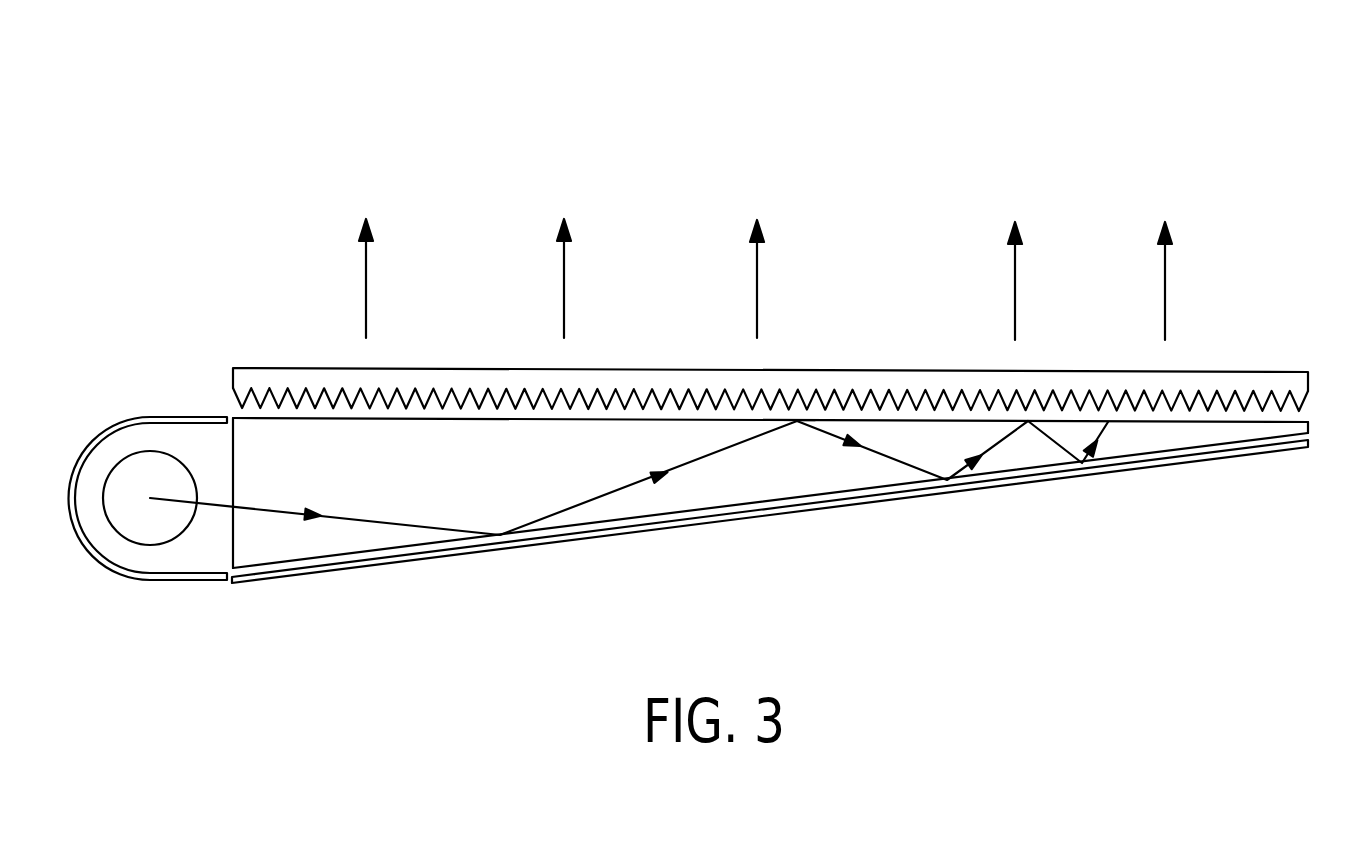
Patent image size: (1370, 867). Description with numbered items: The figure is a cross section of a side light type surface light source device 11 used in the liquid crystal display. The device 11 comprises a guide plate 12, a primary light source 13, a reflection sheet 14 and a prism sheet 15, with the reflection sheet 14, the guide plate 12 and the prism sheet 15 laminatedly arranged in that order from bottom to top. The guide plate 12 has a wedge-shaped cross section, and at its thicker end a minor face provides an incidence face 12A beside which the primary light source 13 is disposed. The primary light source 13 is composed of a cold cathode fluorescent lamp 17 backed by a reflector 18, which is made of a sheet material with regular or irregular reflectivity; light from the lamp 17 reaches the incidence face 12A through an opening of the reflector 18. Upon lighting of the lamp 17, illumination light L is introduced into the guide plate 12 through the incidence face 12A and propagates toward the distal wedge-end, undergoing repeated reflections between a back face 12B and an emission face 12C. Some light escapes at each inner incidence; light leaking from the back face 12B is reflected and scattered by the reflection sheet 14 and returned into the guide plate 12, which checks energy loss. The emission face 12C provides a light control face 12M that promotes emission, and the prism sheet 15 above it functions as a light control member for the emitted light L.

The surface light source device 11 is at (952, 120).
The guide plate 12 is at (720, 497).
The incidence face 12A is at (233, 487).
The back face 12B is at (563, 528).
The emission face 12C is at (797, 421).
The light control face 12M is at (633, 420).
The primary light source 13 is at (138, 330).
The reflection sheet 14 is at (900, 503).
The prism sheet 15 is at (1300, 384).
The cold cathode lamp 17 is at (155, 532).
The reflector 18 is at (93, 556).
The illumination light L is at (1165, 295).